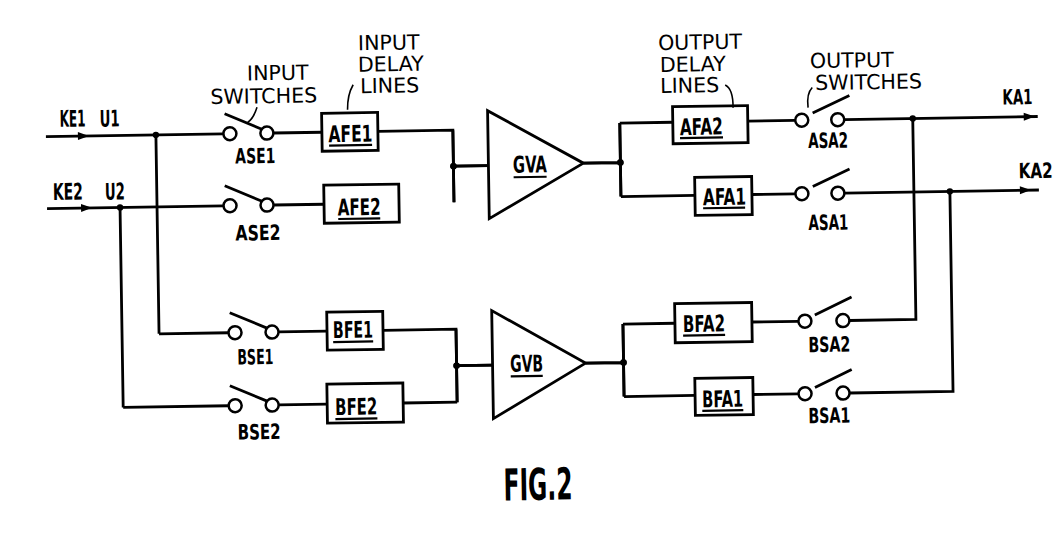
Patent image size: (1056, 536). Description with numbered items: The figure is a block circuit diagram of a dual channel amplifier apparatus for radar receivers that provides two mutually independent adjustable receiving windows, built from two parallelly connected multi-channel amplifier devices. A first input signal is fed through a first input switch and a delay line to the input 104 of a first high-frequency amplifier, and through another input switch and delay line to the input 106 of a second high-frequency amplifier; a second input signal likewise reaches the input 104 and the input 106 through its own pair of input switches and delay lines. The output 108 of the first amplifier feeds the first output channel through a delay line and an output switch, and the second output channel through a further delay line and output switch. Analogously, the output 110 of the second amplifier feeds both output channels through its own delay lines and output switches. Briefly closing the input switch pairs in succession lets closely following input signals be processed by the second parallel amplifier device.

The input of the first high-frequency amplifier GVA 104 is at (485, 161).
The input of the second high-frequency amplifier GVB 106 is at (489, 359).
The output of the high-frequency amplifier GVA 108 is at (589, 163).
The output of the high-frequency amplifier GVB 110 is at (596, 361).